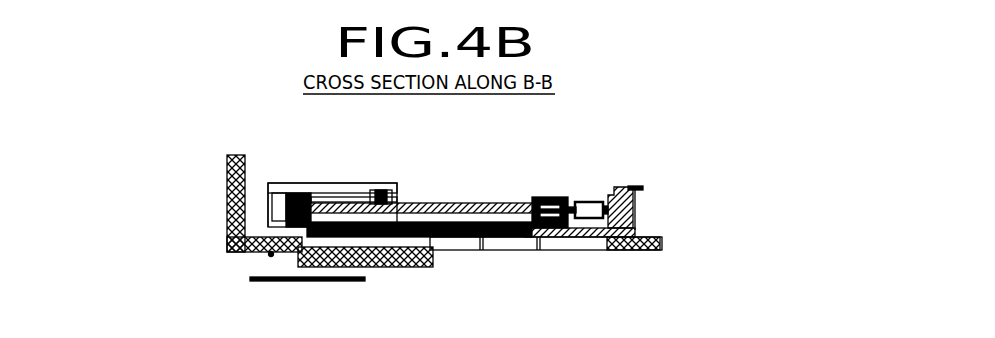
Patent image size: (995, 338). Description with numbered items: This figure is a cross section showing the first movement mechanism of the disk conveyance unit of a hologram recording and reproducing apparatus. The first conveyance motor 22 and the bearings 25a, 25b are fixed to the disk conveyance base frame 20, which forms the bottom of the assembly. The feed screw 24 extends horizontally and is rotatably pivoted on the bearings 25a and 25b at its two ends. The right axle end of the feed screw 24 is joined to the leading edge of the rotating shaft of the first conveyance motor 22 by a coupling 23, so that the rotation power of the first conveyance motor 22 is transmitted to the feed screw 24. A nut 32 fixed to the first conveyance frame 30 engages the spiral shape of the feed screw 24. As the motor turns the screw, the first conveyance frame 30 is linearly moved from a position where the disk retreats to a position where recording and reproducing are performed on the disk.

The disk conveyance base frame 20 is at (612, 258).
The first conveyance motor 22 is at (636, 204).
The coupling 23 is at (590, 201).
The feed screw 24 is at (462, 203).
The bearing 25a is at (540, 197).
The bearing 25b is at (292, 212).
The first conveyance frame 30 is at (320, 183).
The nut 32 is at (386, 186).